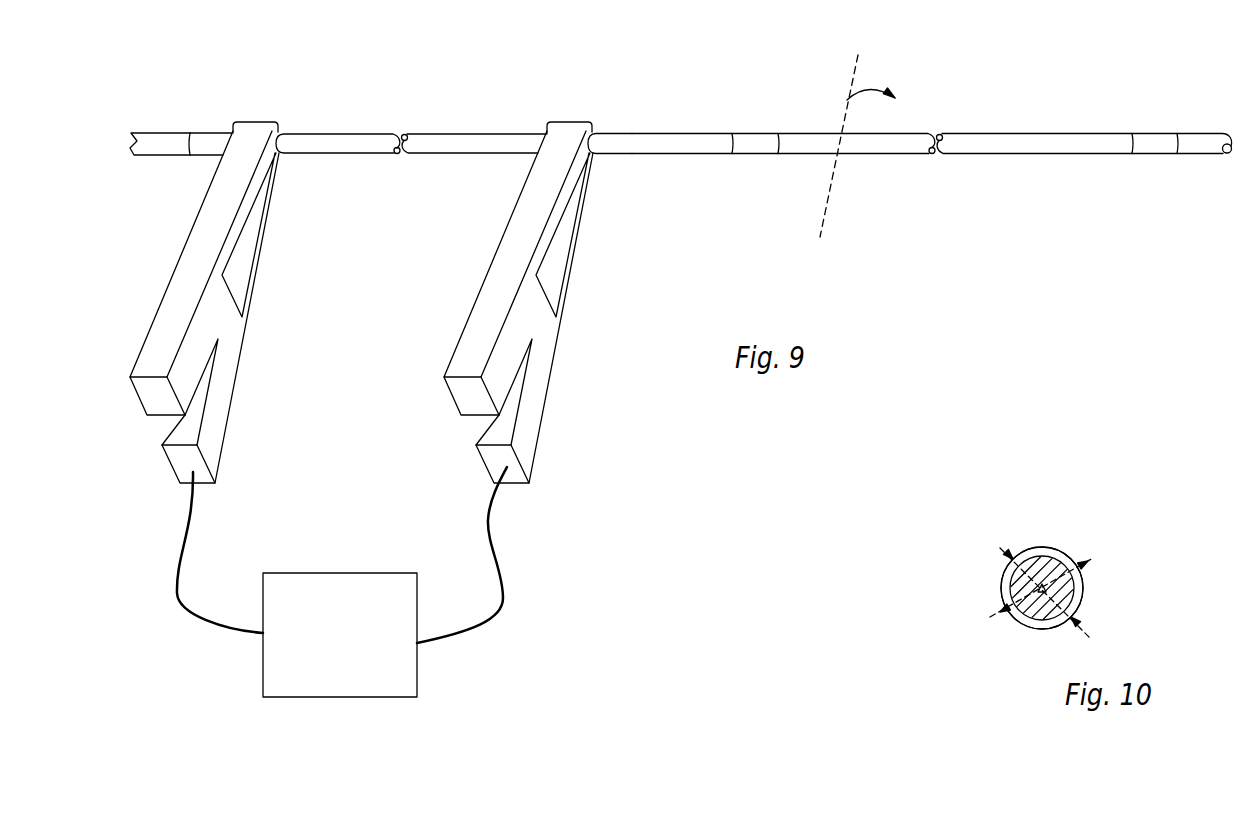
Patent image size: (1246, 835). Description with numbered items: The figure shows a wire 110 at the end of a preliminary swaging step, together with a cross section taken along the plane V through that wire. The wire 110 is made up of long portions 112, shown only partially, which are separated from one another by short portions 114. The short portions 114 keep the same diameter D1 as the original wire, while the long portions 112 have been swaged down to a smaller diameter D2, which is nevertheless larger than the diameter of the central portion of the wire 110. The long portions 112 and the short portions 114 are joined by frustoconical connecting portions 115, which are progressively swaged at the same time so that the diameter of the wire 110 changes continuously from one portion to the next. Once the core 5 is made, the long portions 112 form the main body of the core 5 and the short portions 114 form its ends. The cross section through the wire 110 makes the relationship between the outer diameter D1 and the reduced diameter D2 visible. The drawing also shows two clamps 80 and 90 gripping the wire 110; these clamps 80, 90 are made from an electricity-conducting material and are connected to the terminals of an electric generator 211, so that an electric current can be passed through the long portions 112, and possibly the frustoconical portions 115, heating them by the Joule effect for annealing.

In FIG. 9, the wire 110 is at (1026, 112).
In FIG. 9, the long portions 112 is at (338, 146).
In FIG. 10, the long portions 112 is at (1044, 566).
In FIG. 9, the short portions 114 is at (158, 146).
In FIG. 10, the short portions 114 is at (1079, 600).
In FIG. 9, the frustoconical connecting portions 115 is at (220, 146).
In FIG. 9, the clamp 80 is at (185, 278).
In FIG. 9, the clamp 90 is at (488, 327).
In FIG. 9, the electric generator 211 is at (340, 635).
In FIG. 10, the core 5 is at (1022, 640).
In FIG. 10, the diameter of the short portions D1 is at (1166, 539).
In FIG. 10, the diameter of the long portions D2 is at (1008, 553).
In FIG. 9, the plane V is at (857, 146).